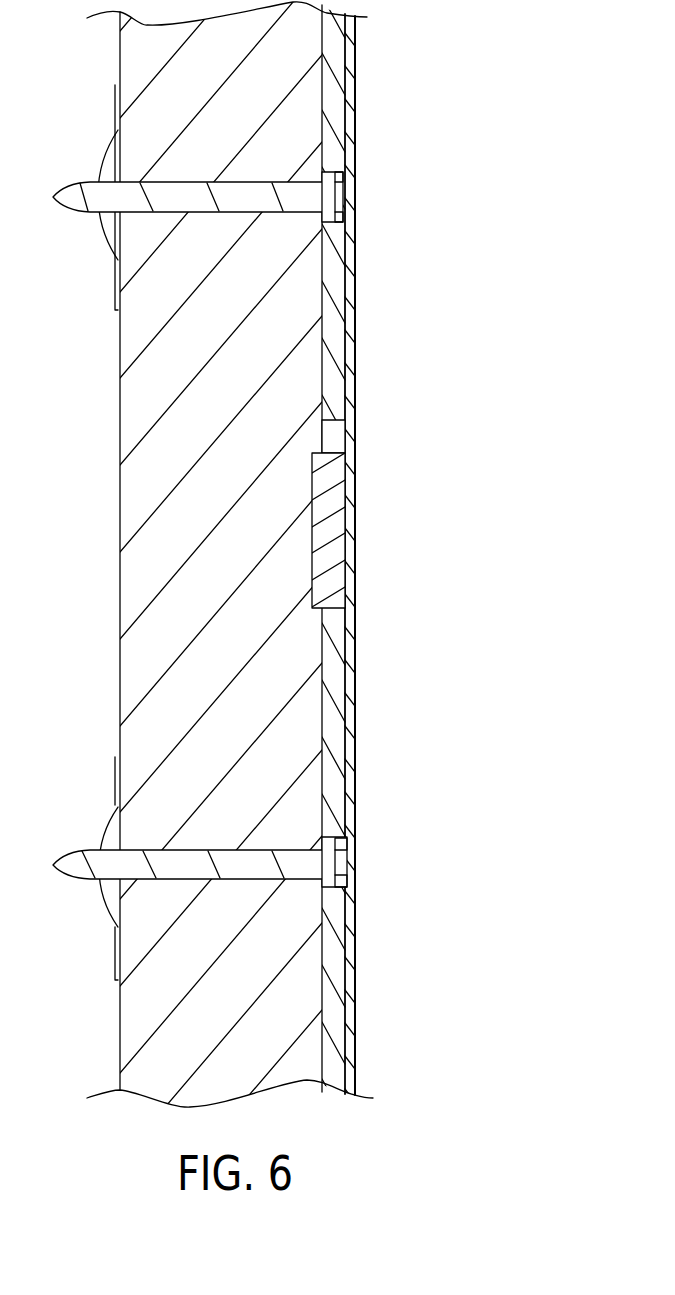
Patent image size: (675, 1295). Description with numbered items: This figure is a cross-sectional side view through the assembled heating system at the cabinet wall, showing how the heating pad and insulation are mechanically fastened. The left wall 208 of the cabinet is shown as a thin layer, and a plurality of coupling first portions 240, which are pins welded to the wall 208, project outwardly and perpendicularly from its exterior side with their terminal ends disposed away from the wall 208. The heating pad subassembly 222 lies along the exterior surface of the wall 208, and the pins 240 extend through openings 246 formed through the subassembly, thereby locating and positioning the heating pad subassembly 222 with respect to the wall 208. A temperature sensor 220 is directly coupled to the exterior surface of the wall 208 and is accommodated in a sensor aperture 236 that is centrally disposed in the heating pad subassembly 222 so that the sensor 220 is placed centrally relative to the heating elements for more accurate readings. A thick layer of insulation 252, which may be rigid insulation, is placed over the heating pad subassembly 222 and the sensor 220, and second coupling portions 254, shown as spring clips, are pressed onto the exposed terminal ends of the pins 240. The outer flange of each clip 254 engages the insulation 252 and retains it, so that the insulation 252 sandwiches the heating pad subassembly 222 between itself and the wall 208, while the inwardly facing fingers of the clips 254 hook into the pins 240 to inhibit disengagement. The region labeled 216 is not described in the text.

The left wall 208 is at (352, 622).
The wall panel 216 is at (459, 247).
The temperature sensor 220 is at (330, 502).
The heating pad subassembly 222 is at (333, 720).
The sensor aperture 236 is at (335, 432).
The coupling first portions 240 is at (190, 198).
The openings 246 is at (327, 218).
The insulation 252 is at (142, 563).
The second coupling portions 254 is at (110, 235).